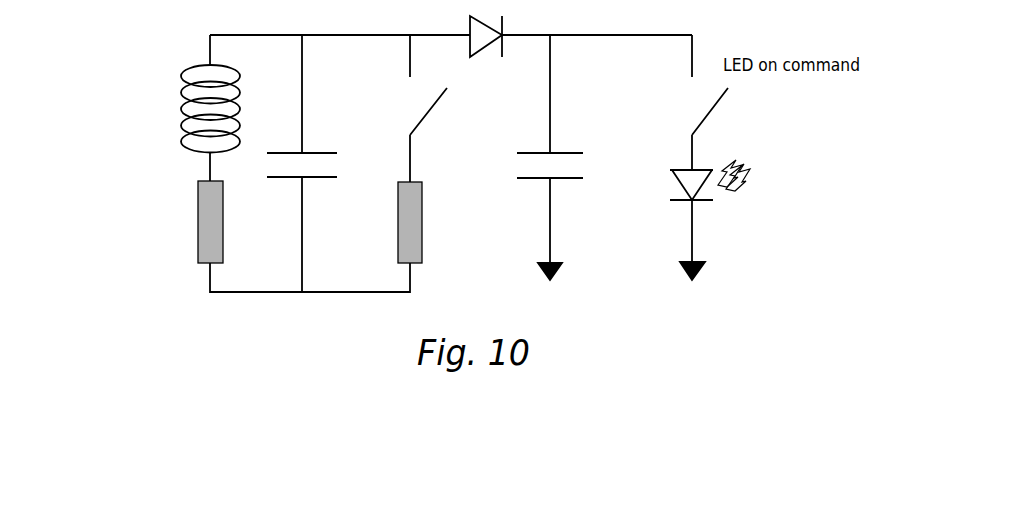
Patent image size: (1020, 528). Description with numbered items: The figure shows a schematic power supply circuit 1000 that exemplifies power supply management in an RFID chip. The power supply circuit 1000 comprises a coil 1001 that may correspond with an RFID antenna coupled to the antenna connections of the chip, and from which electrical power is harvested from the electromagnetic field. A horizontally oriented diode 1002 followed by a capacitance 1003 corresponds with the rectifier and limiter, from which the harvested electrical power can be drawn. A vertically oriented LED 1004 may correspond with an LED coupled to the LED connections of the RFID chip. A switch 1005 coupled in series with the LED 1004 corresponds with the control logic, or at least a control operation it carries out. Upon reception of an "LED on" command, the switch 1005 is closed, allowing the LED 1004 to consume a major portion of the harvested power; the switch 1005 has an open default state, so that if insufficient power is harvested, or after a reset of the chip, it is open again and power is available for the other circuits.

The power supply circuit 1000 is at (173, 330).
The coil 1001 is at (197, 73).
The diode 1002 is at (480, 50).
The capacitance 1003 is at (572, 152).
The LED 1004 is at (678, 188).
The switch 1005 is at (690, 117).